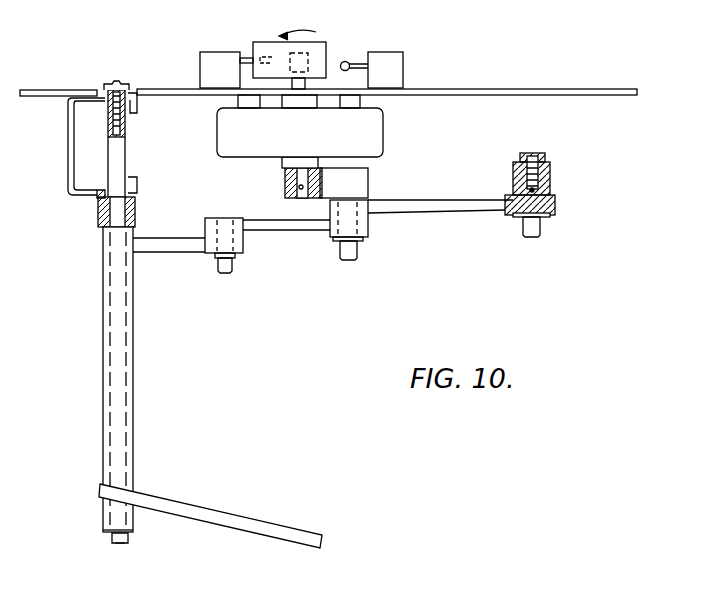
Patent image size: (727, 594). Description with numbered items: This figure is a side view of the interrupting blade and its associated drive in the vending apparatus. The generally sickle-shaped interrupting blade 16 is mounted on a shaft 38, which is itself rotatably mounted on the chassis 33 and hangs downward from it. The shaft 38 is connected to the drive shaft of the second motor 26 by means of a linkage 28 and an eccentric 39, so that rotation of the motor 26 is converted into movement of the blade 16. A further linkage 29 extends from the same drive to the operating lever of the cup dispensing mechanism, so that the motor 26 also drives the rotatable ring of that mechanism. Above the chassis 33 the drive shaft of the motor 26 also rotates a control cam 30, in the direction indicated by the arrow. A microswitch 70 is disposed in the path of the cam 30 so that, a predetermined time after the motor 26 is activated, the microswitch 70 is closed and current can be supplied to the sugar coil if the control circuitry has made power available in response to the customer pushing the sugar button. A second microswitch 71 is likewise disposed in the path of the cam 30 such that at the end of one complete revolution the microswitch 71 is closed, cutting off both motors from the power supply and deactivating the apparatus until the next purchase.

The interrupting blade 16 is at (258, 514).
The second motor 26 is at (371, 126).
The linkage 28 is at (273, 228).
The linkage 29 is at (457, 208).
The control cam 30 is at (323, 43).
The chassis 33 is at (65, 88).
The shaft 38 is at (133, 368).
The eccentric 39 is at (362, 178).
The microswitch 70 is at (250, 58).
The second microswitch 71 is at (356, 62).